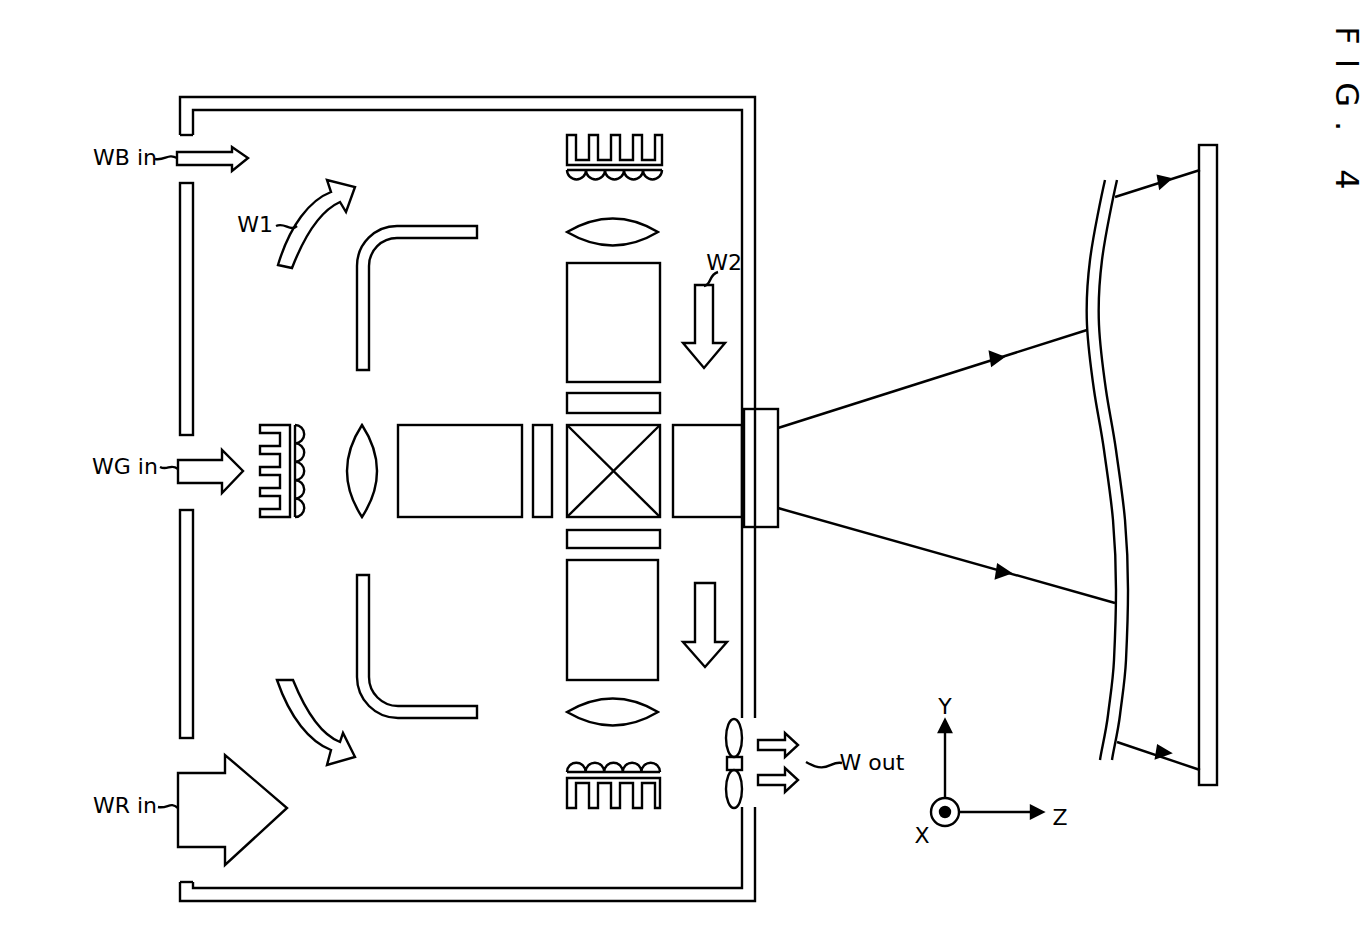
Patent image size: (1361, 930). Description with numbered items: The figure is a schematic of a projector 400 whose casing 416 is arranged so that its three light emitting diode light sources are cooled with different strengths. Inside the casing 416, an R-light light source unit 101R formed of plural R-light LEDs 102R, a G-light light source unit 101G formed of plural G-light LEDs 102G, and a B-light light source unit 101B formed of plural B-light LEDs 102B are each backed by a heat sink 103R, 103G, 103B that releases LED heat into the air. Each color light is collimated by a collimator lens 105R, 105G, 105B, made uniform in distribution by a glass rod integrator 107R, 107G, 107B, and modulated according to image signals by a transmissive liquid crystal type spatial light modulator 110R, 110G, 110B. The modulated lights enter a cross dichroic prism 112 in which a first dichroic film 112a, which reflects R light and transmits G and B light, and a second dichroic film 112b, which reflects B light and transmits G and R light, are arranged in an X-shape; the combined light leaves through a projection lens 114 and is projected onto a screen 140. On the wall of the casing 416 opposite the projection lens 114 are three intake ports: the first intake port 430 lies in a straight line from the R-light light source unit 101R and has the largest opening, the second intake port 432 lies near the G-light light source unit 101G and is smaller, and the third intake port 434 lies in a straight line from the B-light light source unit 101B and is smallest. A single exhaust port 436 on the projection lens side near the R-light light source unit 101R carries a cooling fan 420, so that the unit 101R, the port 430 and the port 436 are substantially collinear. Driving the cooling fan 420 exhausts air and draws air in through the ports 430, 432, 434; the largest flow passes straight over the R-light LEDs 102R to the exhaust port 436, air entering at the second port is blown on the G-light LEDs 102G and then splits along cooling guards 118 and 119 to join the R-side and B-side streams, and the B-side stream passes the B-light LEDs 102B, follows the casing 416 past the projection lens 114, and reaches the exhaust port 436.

The projector 400 is at (890, 150).
The casing 416 is at (665, 97).
The third intake port 434 is at (180, 135).
The second intake port 432 is at (180, 510).
The first intake port 430 is at (180, 882).
The exhaust port 436 is at (752, 800).
The cooling fan 420 is at (742, 735).
The cooling guard 119 is at (377, 266).
The cooling guard 118 is at (388, 706).
The B-light light source unit 101B is at (594, 170).
The B-light LED 102B is at (652, 182).
The heat sink 103B is at (660, 138).
The collimator lens 105B is at (567, 232).
The rod integrator 107B is at (567, 305).
The B-light liquid crystal type spatial light modulator 110B is at (567, 401).
The G-light light source unit 101G is at (308, 470).
The G-light LED 102G is at (310, 517).
The heat sink 103G is at (268, 520).
The collimator lens 105G is at (362, 425).
The rod integrator 107G is at (422, 425).
The G-light liquid crystal type spatial light modulator 110G is at (533, 514).
The R-light light source unit 101R is at (595, 782).
The R-light LED 102R is at (645, 763).
The heat sink 103R is at (658, 801).
The collimator lens 105R is at (567, 712).
The rod integrator 107R is at (567, 640).
The R-light liquid crystal type spatial light modulator 110R is at (567, 548).
The cross dichroic prism 112 is at (603, 483).
The first dichroic film 112a is at (577, 513).
The second dichroic film 112b is at (657, 504).
The projection lens 114 is at (770, 528).
The screen 140 is at (1208, 785).